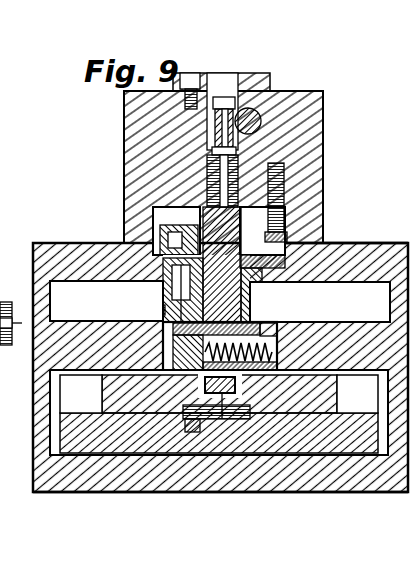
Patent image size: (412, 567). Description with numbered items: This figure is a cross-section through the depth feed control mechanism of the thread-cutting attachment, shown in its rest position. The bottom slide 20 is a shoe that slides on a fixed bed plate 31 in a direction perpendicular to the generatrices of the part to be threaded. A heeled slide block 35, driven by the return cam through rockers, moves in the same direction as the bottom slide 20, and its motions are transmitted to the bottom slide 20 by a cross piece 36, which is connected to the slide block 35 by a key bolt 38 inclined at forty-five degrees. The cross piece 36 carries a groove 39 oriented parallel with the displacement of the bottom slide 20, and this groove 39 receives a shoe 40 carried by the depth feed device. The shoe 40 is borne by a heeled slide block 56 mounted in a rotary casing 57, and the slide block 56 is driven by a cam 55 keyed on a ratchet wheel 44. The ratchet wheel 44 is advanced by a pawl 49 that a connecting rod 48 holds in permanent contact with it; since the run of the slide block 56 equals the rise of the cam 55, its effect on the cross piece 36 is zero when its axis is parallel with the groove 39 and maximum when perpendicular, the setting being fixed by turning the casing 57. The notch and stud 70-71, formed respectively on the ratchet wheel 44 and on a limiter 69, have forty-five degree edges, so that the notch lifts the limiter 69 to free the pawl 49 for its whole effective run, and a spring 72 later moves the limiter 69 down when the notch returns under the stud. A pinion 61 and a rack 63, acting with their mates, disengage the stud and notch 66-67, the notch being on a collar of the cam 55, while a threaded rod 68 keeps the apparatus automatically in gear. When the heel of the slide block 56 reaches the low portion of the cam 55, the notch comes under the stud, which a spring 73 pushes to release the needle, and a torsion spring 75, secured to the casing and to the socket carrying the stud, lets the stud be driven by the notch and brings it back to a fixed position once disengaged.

The bottom slide 20 is at (98, 432).
The fixed bed plate 31 is at (42, 486).
The heeled slide block 35 is at (183, 432).
The cross piece 36 is at (283, 403).
The key bolt 38 is at (163, 492).
The groove 39 is at (215, 405).
The shoe 40 is at (233, 405).
The ratchet wheel 44 is at (252, 293).
The connecting rod 48 is at (137, 308).
The pawl 49 is at (117, 288).
The cam 55 is at (320, 314).
The heeled slide block 56 is at (157, 350).
The rotary casing 57 is at (72, 355).
The pinion 61 is at (256, 110).
The rack 63 is at (245, 87).
The stud and notch 66-67 is at (308, 291).
The threaded rod 68 is at (262, 150).
The limiter 69 is at (147, 275).
The notch and stud 70-71 is at (328, 243).
The spring 72 is at (287, 177).
The spring 73 is at (324, 104).
The torsion spring 75 is at (258, 238).